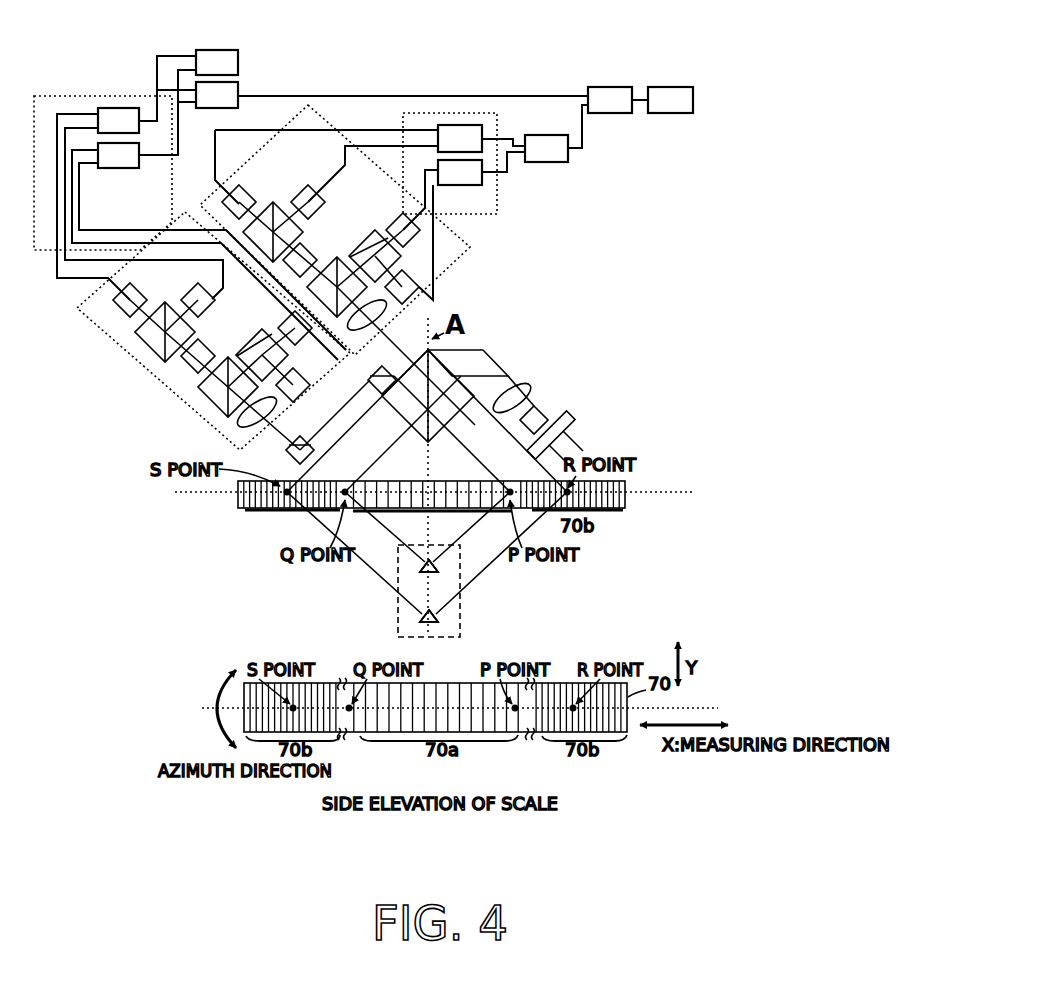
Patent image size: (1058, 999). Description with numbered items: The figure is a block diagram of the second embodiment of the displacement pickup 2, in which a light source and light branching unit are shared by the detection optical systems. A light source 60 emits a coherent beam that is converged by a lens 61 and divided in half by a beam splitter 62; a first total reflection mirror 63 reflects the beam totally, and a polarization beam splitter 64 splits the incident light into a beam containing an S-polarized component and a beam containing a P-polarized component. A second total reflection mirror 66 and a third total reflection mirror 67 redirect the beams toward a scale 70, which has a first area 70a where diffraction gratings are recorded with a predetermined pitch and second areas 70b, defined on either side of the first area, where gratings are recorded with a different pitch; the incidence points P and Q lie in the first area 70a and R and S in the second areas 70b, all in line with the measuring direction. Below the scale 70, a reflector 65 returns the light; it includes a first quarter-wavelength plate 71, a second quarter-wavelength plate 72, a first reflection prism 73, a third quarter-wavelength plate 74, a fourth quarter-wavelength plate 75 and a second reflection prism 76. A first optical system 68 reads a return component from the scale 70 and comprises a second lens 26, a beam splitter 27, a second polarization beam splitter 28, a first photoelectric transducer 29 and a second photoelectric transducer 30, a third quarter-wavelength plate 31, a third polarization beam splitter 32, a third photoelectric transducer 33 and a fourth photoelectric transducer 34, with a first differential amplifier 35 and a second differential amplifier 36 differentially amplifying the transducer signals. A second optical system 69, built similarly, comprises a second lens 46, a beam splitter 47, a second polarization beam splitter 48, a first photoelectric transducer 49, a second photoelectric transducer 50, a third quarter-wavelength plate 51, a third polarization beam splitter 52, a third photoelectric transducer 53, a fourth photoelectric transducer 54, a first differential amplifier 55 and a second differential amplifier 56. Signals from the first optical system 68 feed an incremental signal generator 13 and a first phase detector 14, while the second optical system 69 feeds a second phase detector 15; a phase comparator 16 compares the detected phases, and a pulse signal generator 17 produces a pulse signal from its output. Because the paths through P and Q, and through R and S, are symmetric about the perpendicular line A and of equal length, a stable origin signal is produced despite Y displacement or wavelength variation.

The displacement pickup 2 is at (627, 56).
The incremental signal generator 13 is at (217, 62).
The first phase detector 14 is at (217, 95).
The second phase detector 15 is at (546, 148).
The phase comparator 16 is at (610, 100).
The pulse signal generator 17 is at (670, 100).
The second lens 26 is at (243, 431).
The beam splitter 27 is at (210, 403).
The second polarization beam splitter 28 is at (247, 349).
The first photoelectric transducer 29 is at (293, 385).
The second photoelectric transducer 30 is at (295, 328).
The third quarter-wavelength plate 31 is at (182, 383).
The third polarization beam splitter 32 is at (142, 348).
The third photoelectric transducer 33 is at (198, 300).
The fourth photoelectric transducer 34 is at (130, 300).
The first differential amplifier 35 is at (118, 155).
The second differential amplifier 36 is at (118, 120).
The second lens 46 is at (376, 316).
The beam splitter 47 is at (335, 275).
The second polarization beam splitter 48 is at (355, 248).
The first photoelectric transducer 49 is at (402, 287).
The second photoelectric transducer 50 is at (403, 230).
The third quarter-wavelength plate 51 is at (306, 252).
The third polarization beam splitter 52 is at (268, 215).
The third photoelectric transducer 53 is at (308, 202).
The fourth photoelectric transducer 54 is at (239, 202).
The first differential amplifier 55 is at (460, 172).
The second differential amplifier 56 is at (460, 138).
The light source 60 is at (541, 416).
The lens 61 is at (522, 392).
The beam splitter 62 is at (501, 375).
The first total reflection mirror 63 is at (476, 349).
The polarization beam splitter 64 is at (398, 425).
The reflector 65 is at (462, 624).
The second total reflection mirror 66 is at (377, 376).
The third total reflection mirror 67 is at (304, 441).
The first optical system 68 is at (75, 93).
The second optical system 69 is at (498, 214).
The scale 70 is at (623, 486).
The first area 70a is at (432, 523).
The second areas 70b is at (292, 523).
The first quarter-wavelength plate 71 is at (441, 566).
The second quarter-wavelength plate 72 is at (417, 566).
The first reflection prism 73 is at (426, 573).
The third quarter-wavelength plate 74 is at (441, 616).
The fourth quarter-wavelength plate 75 is at (417, 616).
The second reflection prism 76 is at (425, 623).